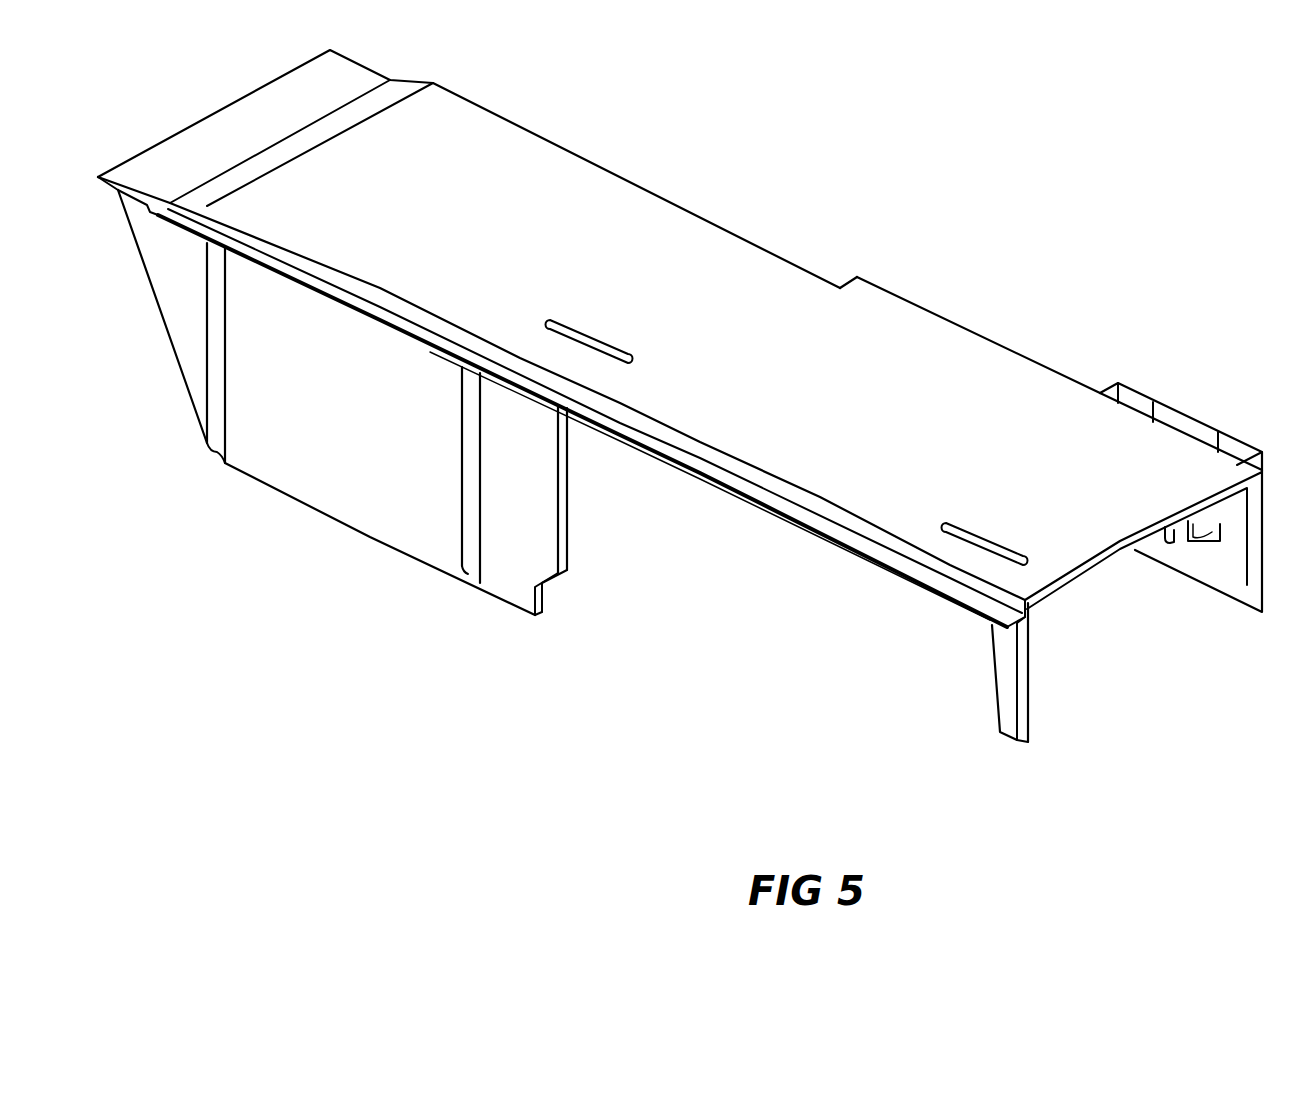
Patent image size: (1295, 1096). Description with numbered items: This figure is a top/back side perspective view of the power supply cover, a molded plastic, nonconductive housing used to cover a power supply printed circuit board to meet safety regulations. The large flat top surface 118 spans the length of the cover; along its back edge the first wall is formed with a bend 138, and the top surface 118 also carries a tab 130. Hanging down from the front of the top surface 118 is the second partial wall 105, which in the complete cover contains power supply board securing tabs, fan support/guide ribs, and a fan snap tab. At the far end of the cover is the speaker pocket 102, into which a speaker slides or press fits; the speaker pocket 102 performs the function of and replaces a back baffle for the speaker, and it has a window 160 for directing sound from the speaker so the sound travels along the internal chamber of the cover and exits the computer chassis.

The top surface 118 is at (585, 195).
The bend 138 is at (848, 280).
The speaker pocket 102 is at (1182, 410).
The second partial wall 105 is at (353, 488).
The tab 130 is at (1133, 543).
The window 160 is at (1210, 537).